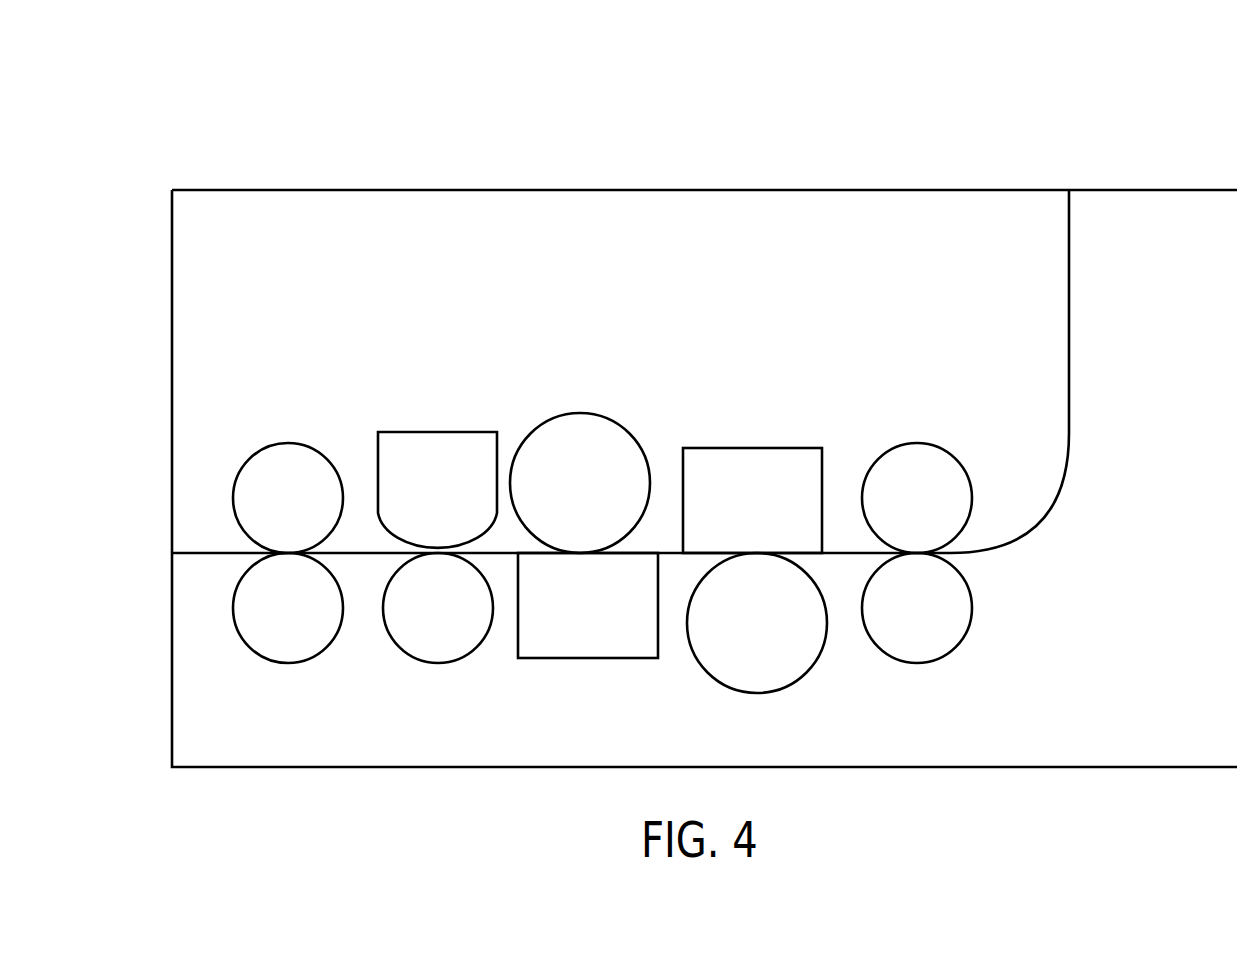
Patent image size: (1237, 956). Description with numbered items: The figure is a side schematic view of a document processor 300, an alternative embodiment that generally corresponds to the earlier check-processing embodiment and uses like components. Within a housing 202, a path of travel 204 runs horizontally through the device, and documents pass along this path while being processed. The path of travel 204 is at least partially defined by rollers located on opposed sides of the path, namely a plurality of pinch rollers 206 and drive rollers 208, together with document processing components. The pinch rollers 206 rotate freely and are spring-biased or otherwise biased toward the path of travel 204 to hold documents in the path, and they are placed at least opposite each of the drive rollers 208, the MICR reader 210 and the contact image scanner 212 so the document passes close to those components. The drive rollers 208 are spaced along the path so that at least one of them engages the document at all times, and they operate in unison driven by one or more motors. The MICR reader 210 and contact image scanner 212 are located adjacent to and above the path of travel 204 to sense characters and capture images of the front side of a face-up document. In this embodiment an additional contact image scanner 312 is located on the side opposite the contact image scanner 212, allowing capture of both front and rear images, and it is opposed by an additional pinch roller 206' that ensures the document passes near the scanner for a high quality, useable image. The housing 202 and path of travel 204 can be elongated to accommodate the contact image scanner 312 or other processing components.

The document processor 300 is at (1049, 103).
The housing 202 is at (1172, 190).
The path of travel 204 is at (1070, 385).
The pinch rollers 206 is at (602, 571).
The additional pinch roller 206' is at (580, 450).
The drive rollers 208 is at (287, 663).
The MICR reader 210 is at (448, 432).
The contact image scanner 212 is at (760, 448).
The additional contact image scanner 312 is at (595, 660).